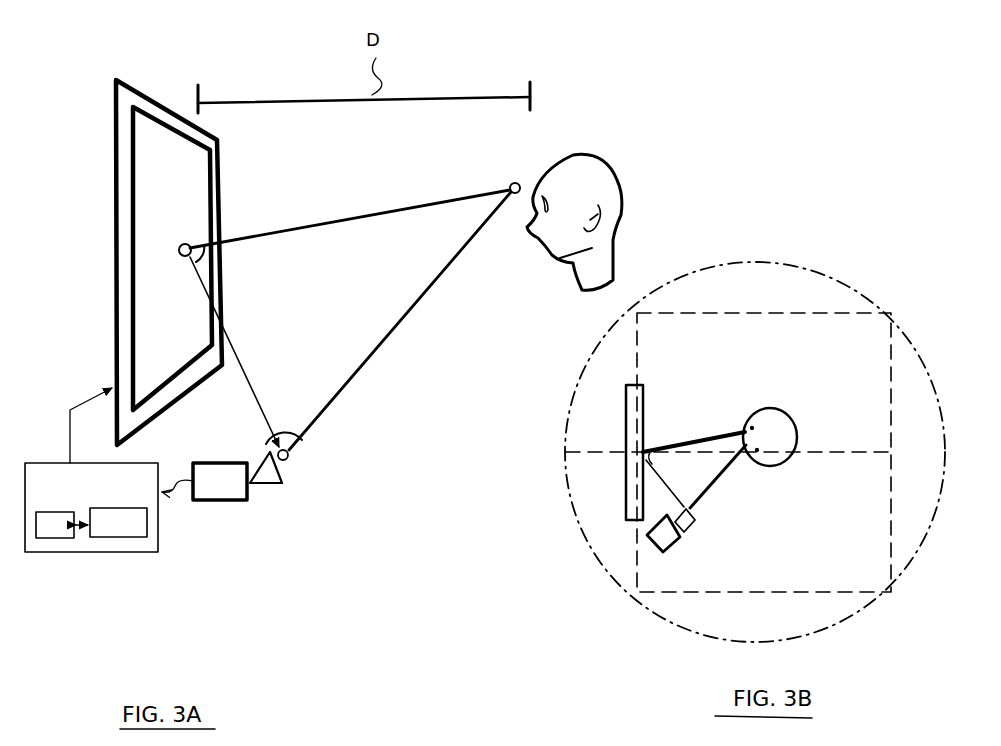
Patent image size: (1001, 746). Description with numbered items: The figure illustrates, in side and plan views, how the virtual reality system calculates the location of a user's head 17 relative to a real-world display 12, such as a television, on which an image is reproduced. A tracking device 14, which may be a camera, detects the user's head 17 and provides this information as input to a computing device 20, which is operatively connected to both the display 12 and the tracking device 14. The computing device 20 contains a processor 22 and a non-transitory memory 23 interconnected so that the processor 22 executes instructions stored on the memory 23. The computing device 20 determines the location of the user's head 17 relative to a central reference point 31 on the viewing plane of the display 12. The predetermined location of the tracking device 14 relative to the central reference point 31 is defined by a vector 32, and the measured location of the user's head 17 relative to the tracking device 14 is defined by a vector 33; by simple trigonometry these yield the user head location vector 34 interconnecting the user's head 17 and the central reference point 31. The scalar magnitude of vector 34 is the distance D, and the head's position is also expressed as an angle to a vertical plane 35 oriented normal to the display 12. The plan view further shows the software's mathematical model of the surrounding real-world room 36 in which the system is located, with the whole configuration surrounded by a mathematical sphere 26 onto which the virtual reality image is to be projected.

In FIG. 3A, the display 12 is at (113, 98).
In FIG. 3B, the display 12 is at (630, 380).
In FIG. 3A, the tracking device 14 is at (216, 503).
In FIG. 3B, the tracking device 14 is at (677, 546).
In FIG. 3A, the user's head 17 is at (623, 193).
In FIG. 3B, the user's head 17 is at (783, 410).
In FIG. 3A, the computing device 20 is at (111, 536).
In FIG. 3A, the processor 22 is at (50, 540).
In FIG. 3A, the non-transitory memory 23 is at (113, 540).
In FIG. 3B, the mathematical sphere 26 is at (598, 573).
In FIG. 3A, the central reference point 31 is at (176, 250).
In FIG. 3B, the central reference point 31 is at (640, 453).
In FIG. 3A, the vector 32 is at (247, 378).
In FIG. 3B, the vector 32 is at (660, 491).
In FIG. 3A, the vector 33 is at (405, 338).
In FIG. 3B, the vector 33 is at (721, 476).
In FIG. 3A, the user head location vector 34 is at (436, 194).
In FIG. 3B, the user head location vector 34 is at (688, 434).
In FIG. 3B, the vertical plane 35 is at (846, 448).
In FIG. 3B, the surrounding space 36 is at (685, 598).